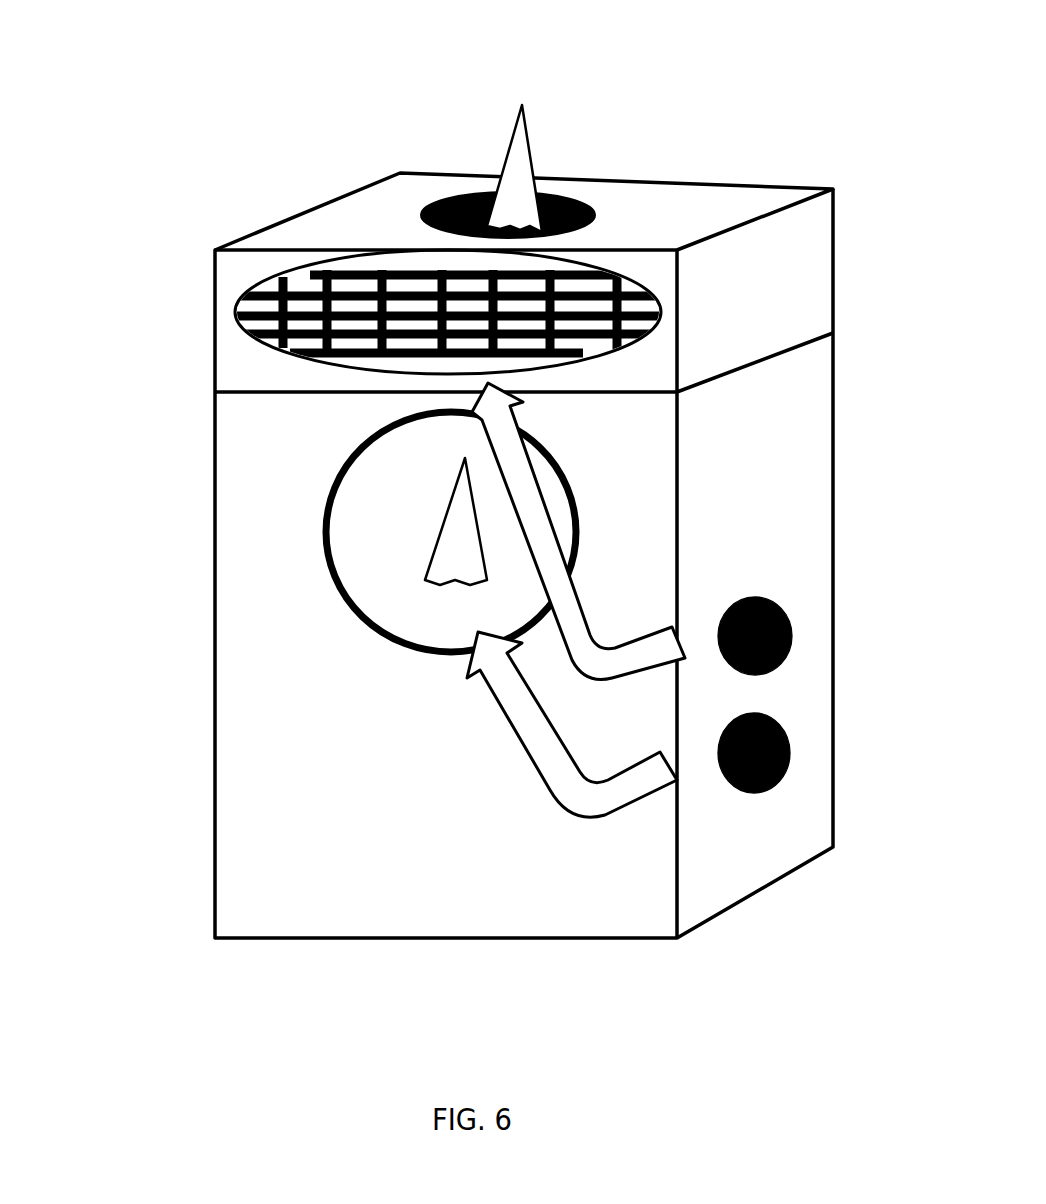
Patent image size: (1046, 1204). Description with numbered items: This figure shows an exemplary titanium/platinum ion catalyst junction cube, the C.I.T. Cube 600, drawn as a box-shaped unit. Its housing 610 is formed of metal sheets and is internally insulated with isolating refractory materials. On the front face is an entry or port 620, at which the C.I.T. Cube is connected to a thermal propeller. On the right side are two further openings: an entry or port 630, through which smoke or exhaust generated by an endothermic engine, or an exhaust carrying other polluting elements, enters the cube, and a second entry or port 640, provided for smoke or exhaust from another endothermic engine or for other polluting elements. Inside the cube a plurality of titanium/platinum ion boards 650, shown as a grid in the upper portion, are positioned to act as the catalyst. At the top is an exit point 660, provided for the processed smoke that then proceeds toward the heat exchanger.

The C.I.T. Cube 600 is at (133, 35).
The housing 610 is at (260, 883).
The entry or port 620 is at (350, 558).
The entry or port 630 is at (790, 757).
The second entry or port 640 is at (788, 630).
The titanium/platinum ion boards 650 is at (240, 312).
The exit point 660 is at (590, 203).